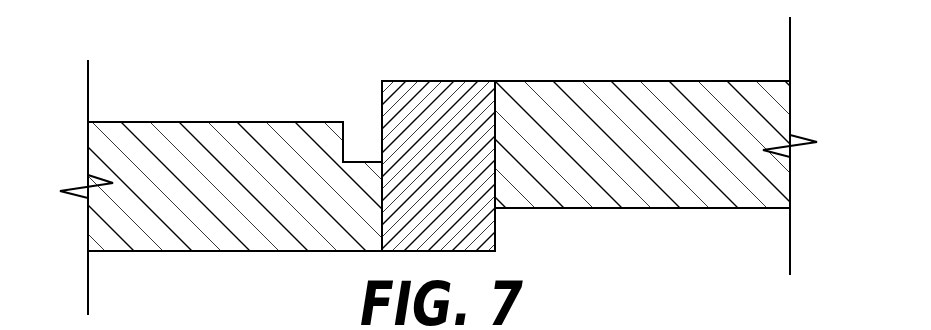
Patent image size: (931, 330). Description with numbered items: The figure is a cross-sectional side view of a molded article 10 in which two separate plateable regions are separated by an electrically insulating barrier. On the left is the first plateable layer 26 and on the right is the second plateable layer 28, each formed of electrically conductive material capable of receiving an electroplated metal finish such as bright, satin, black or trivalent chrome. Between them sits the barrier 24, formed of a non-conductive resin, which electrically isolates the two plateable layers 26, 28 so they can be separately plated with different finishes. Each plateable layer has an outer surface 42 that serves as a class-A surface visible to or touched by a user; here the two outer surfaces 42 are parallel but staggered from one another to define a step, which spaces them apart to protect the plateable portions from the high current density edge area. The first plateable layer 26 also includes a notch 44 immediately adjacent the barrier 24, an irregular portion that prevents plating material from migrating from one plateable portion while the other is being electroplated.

The molded article 10 is at (462, 159).
The first plateable layer 26 is at (155, 157).
The outer surface 42 is at (240, 121).
The notch 44 is at (360, 137).
The barrier 24 is at (470, 103).
The second plateable layer 28 is at (727, 113).